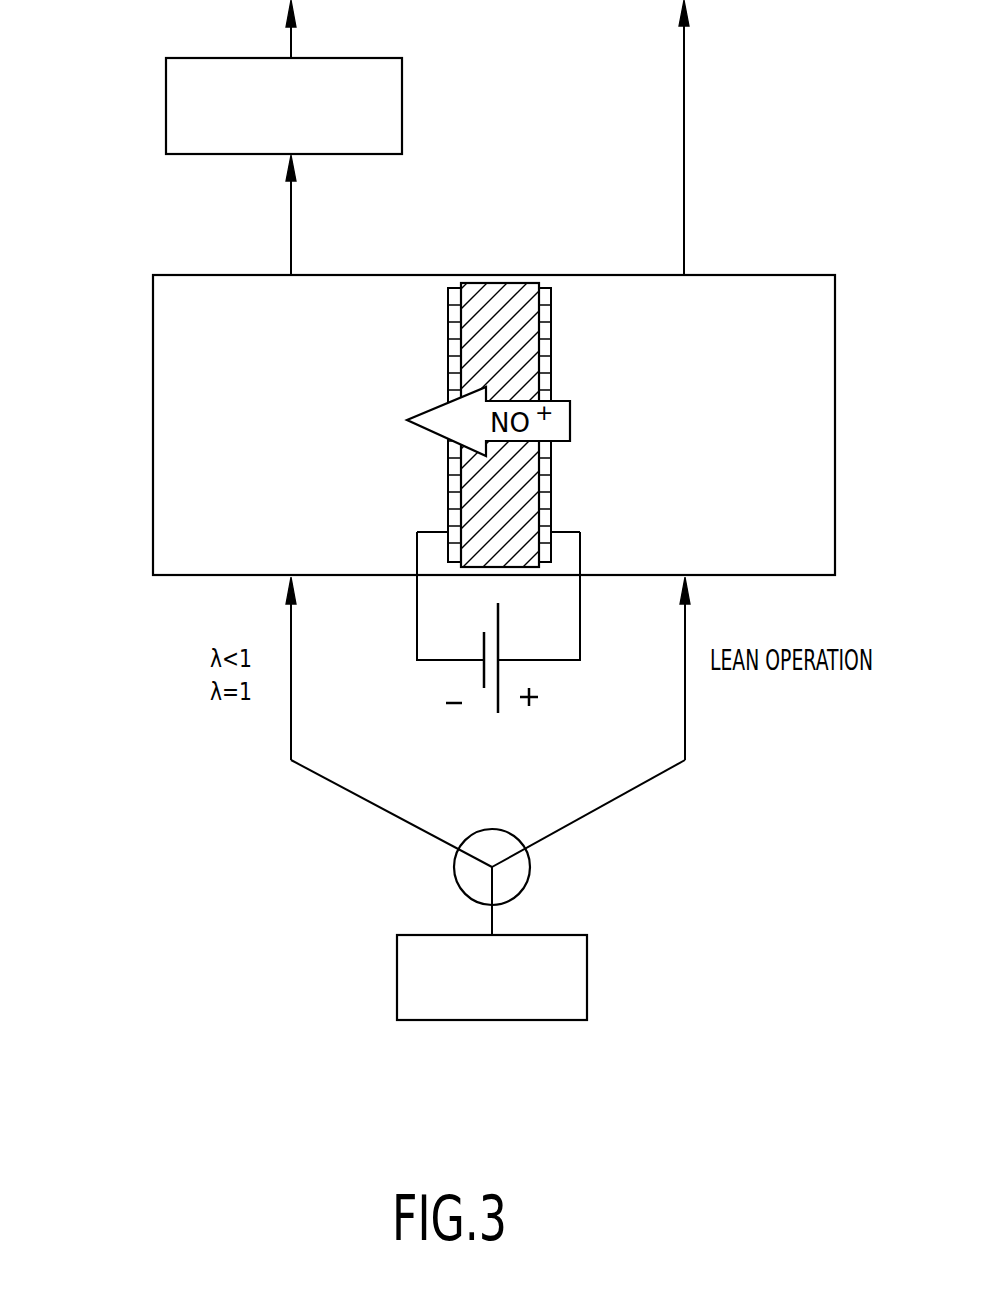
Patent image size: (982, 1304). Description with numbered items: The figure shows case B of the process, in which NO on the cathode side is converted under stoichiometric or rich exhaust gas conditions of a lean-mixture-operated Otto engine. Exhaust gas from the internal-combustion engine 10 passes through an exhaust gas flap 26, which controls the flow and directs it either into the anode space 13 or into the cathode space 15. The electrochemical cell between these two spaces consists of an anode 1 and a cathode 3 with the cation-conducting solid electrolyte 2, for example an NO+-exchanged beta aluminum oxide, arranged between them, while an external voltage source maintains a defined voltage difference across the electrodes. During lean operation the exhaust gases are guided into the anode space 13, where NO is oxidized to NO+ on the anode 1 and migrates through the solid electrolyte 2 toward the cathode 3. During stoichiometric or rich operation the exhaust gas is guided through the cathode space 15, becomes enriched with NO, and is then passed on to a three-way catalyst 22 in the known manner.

The three-way catalyst 22 is at (165, 112).
The solid electrolyte 2 is at (527, 297).
The cathode 3 is at (447, 312).
The anode 1 is at (552, 323).
The cathode space 15 is at (180, 412).
The anode space 13 is at (798, 433).
The exhaust gas flap 26 is at (455, 870).
The internal-combustion engine 10 is at (590, 970).